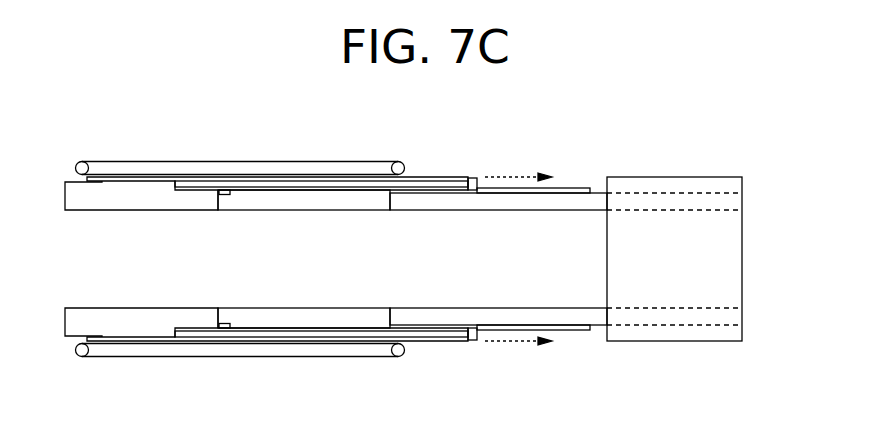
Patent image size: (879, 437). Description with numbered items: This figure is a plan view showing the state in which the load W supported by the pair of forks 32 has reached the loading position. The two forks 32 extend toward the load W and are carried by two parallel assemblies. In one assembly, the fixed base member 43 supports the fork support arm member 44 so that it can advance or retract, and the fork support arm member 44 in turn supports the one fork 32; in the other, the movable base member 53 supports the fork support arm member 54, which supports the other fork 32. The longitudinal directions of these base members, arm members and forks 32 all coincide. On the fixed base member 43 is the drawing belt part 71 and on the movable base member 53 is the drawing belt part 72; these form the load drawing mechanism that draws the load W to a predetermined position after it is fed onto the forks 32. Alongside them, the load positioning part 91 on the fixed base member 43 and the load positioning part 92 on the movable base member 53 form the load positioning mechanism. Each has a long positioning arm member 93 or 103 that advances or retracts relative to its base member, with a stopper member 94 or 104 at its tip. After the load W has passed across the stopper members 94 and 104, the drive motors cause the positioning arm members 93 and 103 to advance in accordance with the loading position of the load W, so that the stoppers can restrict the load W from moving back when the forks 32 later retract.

The drawing belt part 72 is at (181, 157).
The drawing belt part 71 is at (180, 360).
The load positioning part 92 is at (429, 174).
The load positioning part 91 is at (428, 342).
The positioning arm member 103 is at (275, 184).
The positioning arm member 93 is at (273, 336).
The stopper member 104 is at (477, 177).
The stopper member 94 is at (477, 340).
The movable base member 53 is at (172, 205).
The fixed base member 43 is at (175, 315).
The fork support arm member 54 is at (347, 200).
The fork support arm member 44 is at (345, 313).
The fork 32 is at (465, 205).
The load W is at (742, 245).